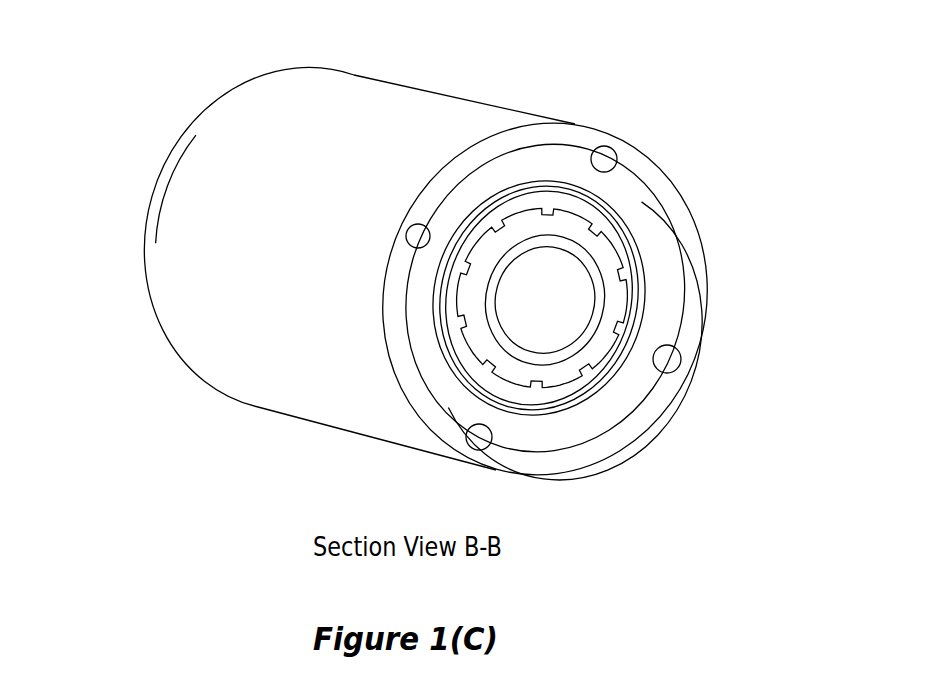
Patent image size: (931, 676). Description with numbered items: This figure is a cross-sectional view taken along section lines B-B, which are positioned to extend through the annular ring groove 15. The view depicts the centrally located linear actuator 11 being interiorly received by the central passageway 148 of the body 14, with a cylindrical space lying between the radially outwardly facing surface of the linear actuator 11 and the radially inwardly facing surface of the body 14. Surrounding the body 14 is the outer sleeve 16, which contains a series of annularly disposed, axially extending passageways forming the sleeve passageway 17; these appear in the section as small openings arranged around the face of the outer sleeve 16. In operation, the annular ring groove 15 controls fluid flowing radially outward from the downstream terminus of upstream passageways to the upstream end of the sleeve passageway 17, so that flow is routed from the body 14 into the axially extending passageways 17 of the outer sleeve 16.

The linear actuator 11 is at (560, 322).
The body 14 is at (558, 222).
The annular ring groove 15 is at (660, 258).
The outer sleeve 16 is at (238, 337).
The sleeve passageway 17 is at (417, 233).
The central passageway 148 is at (595, 318).